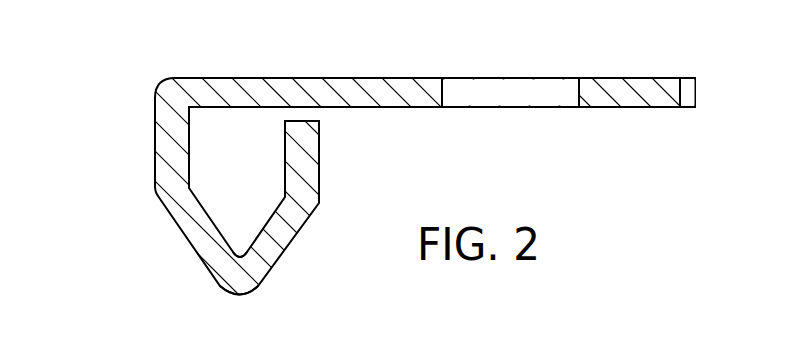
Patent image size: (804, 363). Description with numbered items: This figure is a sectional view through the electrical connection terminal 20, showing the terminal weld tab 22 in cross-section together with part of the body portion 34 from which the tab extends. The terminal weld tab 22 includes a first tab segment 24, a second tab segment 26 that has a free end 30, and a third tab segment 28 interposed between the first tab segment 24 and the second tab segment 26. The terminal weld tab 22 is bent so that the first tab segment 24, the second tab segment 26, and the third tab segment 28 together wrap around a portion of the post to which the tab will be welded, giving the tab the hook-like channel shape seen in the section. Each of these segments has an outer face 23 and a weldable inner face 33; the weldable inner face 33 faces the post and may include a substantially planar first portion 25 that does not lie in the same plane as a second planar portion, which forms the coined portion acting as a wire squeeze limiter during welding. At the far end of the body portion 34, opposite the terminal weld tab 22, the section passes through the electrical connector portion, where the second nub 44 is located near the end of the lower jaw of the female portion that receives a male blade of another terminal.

The electrical connection terminal 20 is at (381, 65).
The terminal weld tab 22 is at (146, 178).
The outer face 23 is at (154, 113).
The first tab segment 24 is at (172, 148).
The substantially planar first portion 25 is at (285, 142).
The second tab segment 26 is at (300, 190).
The third tab segment 28 is at (236, 278).
The free end 30 is at (302, 120).
The weldable inner face 33 is at (283, 182).
The body portion 34 is at (209, 78).
The second nub 44 is at (629, 98).